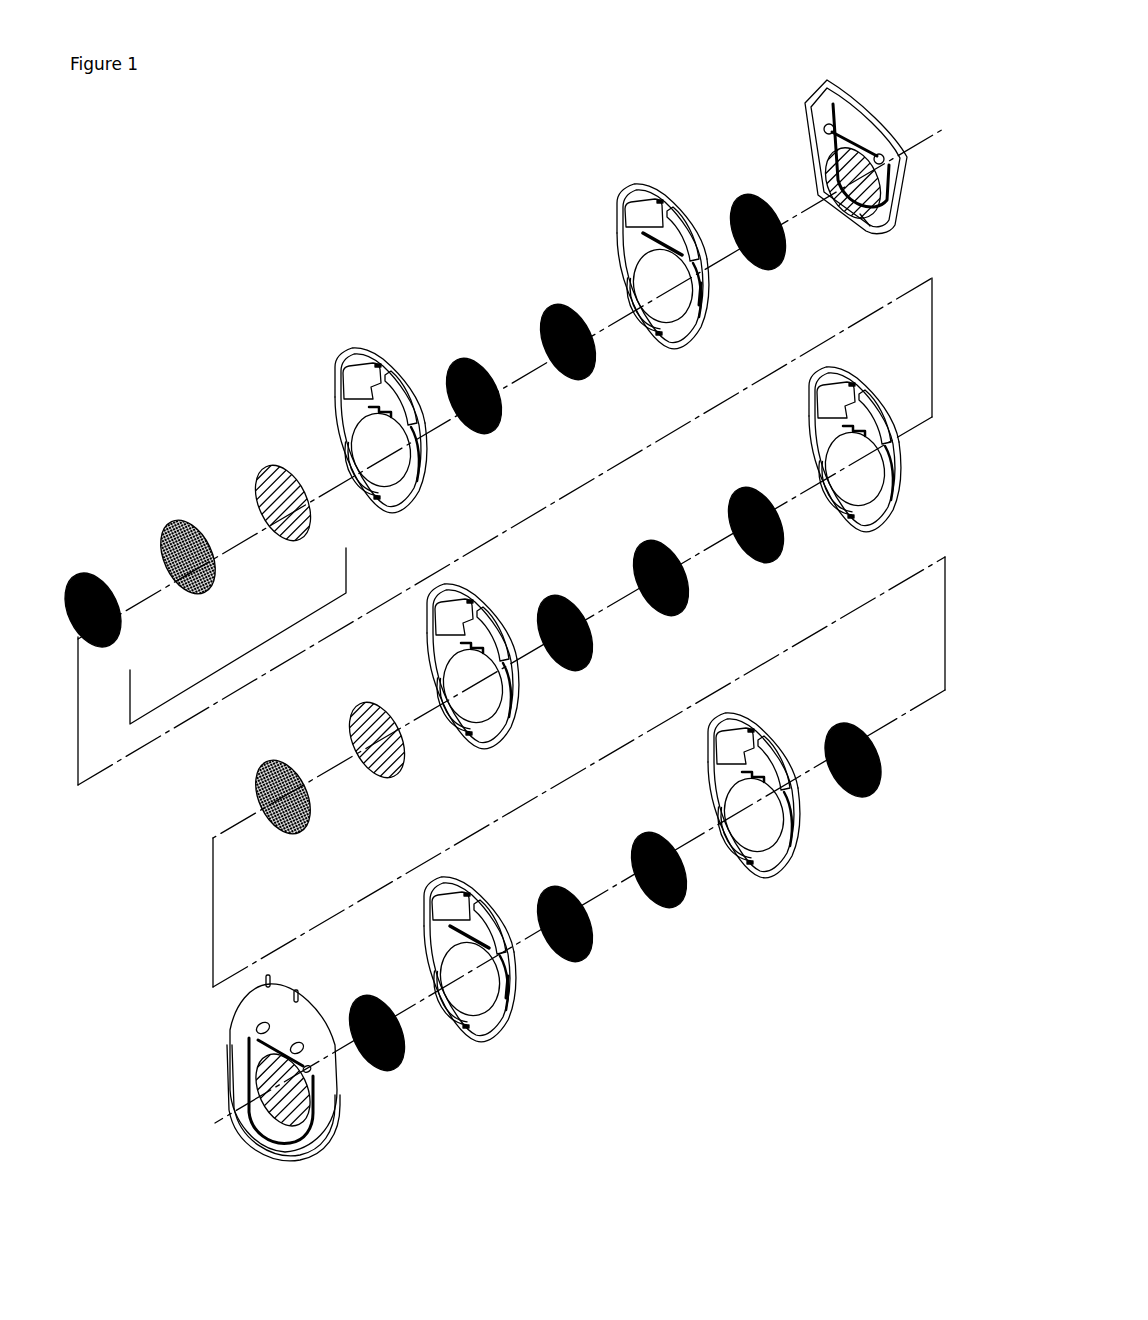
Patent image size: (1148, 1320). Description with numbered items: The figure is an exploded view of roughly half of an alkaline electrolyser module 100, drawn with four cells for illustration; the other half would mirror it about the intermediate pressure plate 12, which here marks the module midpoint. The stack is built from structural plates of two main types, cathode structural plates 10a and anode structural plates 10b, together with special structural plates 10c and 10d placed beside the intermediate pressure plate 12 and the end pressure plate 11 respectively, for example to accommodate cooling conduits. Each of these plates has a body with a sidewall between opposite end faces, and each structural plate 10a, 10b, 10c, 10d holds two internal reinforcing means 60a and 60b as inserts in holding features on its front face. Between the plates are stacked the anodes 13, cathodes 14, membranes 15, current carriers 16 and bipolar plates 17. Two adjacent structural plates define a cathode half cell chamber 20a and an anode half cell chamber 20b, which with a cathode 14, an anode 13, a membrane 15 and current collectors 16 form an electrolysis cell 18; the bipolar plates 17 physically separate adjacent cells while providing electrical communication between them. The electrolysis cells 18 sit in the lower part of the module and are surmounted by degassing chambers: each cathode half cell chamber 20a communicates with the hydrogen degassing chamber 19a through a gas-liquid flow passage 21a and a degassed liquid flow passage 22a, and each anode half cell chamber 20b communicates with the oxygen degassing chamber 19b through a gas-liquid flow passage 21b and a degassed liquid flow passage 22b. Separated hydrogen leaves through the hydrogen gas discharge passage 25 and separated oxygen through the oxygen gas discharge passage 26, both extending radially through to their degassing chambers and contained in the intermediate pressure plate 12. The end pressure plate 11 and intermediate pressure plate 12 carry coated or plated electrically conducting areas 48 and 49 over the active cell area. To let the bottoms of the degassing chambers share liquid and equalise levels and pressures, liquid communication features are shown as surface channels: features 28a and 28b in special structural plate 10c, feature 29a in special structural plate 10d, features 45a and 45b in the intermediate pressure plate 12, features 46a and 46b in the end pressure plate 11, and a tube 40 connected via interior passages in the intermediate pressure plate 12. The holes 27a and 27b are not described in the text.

The alkaline electrolyser module 100 is at (511, 625).
The cathode structural plate 10a is at (868, 510).
The anode structural plate 10b is at (369, 483).
The special structural plate 10c is at (515, 984).
The special structural plate 10d is at (708, 291).
The end pressure plate 11 is at (888, 233).
The intermediate pressure plate 12 is at (267, 1131).
The anode 13 is at (300, 532).
The cathode 14 is at (110, 635).
The membrane 15 is at (205, 582).
The current carrier 16 is at (491, 421).
The bipolar plate 17 is at (585, 371).
The electrolysis cell 18 is at (238, 636).
The hydrogen degassing chamber 19a is at (358, 378).
The oxygen degassing chamber 19b is at (396, 400).
The cathode half cell chamber 20a is at (868, 482).
The anode half cell chamber 20b is at (393, 468).
The gas-liquid flow passage 21a is at (837, 417).
The gas-liquid flow passage 21b is at (378, 413).
The degassed liquid flow passage 22a is at (818, 470).
The degassed liquid flow passage 22b is at (417, 460).
The hydrogen gas discharge passage 25 is at (297, 1000).
The oxygen gas discharge passage 26 is at (270, 983).
The hole 27a is at (258, 1026).
The hole 27b is at (307, 1071).
The liquid communication passage feature 28a is at (463, 941).
The liquid communication passage feature 28b is at (700, 291).
The liquid communication passage feature 29a is at (647, 247).
The liquid communication tube 40 is at (228, 1081).
The liquid communication passage feature 45a is at (260, 1046).
The liquid communication passage feature 45b is at (292, 1133).
The liquid communication passage feature 46a is at (867, 150).
The liquid communication passage feature 46b is at (862, 221).
The electrically conducting area 48 is at (843, 168).
The electrically conducting area 49 is at (287, 1104).
The internal reinforcing means 60a is at (366, 358).
The internal reinforcing means 60b is at (391, 503).